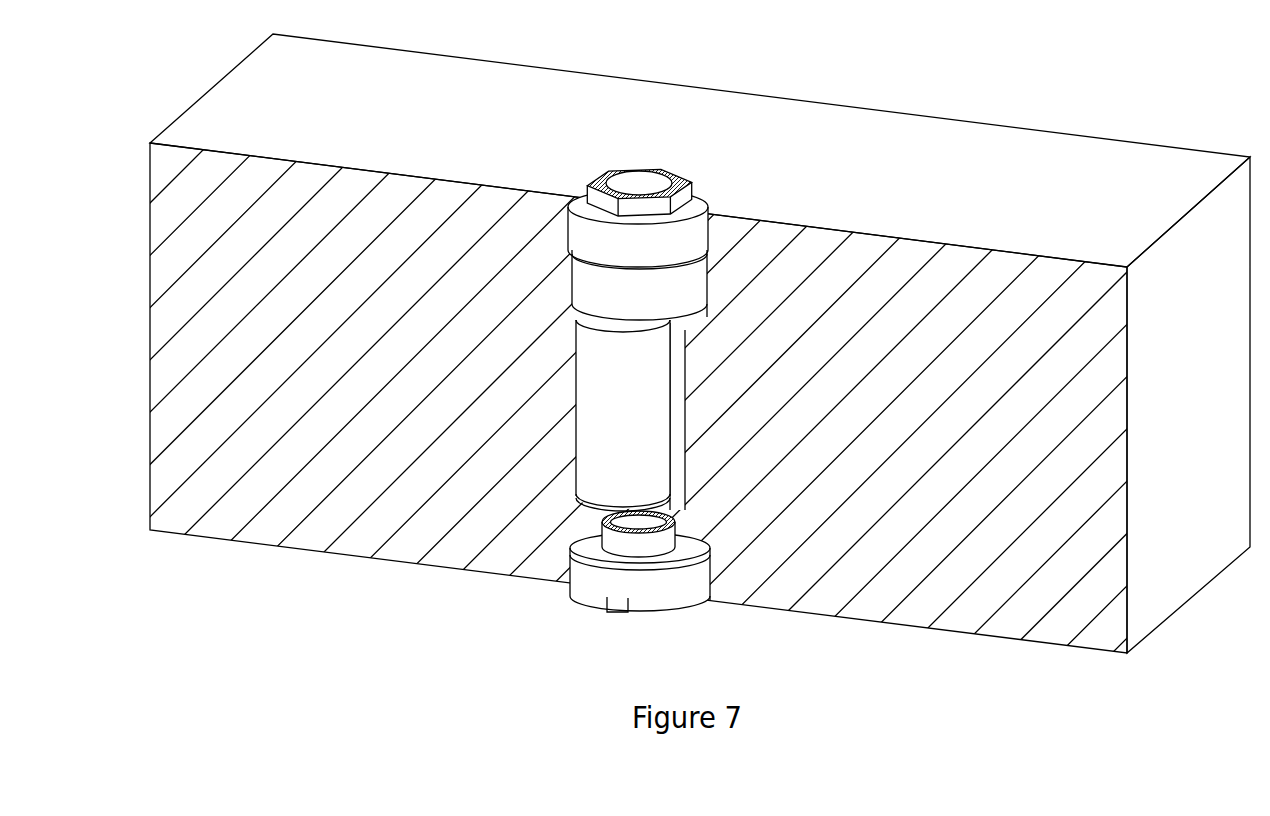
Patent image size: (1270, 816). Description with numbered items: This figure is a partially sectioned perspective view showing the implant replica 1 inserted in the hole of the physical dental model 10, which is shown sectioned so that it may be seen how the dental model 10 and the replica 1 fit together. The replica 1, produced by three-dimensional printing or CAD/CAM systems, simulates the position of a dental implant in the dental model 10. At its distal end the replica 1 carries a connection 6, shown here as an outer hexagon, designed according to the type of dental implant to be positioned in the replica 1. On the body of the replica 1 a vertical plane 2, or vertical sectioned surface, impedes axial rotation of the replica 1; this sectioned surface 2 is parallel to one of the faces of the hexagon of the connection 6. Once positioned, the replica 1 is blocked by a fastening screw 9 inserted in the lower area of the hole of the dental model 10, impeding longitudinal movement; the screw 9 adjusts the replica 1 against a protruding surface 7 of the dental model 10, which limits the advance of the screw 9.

The replica 1 is at (702, 207).
The vertical plane 2 is at (685, 410).
The connection 6 is at (698, 180).
The protruding surface 7 is at (682, 569).
The fastening screw 9 is at (591, 595).
The dental model 10 is at (1016, 175).